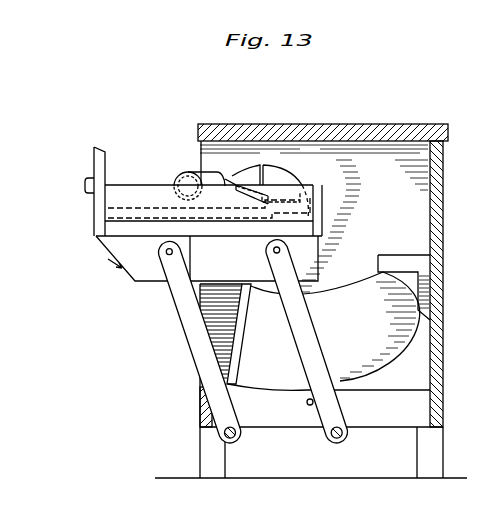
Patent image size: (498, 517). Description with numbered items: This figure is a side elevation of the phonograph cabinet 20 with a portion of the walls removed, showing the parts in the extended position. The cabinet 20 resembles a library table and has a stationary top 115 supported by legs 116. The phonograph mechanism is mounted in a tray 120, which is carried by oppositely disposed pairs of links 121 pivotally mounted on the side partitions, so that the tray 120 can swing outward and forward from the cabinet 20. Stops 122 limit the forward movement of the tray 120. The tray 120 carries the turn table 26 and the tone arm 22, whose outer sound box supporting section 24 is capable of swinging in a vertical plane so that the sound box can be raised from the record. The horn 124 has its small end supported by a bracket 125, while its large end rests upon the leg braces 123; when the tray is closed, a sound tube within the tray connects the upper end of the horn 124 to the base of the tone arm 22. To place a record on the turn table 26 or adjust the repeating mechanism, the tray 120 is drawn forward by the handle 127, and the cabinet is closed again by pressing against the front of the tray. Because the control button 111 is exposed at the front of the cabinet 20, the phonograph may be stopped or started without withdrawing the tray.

The stationary top 115 is at (372, 130).
The cabinet 20 is at (443, 197).
The handle 127 is at (86, 179).
The tray 120 is at (139, 273).
The turn table 26 is at (133, 210).
The control button 111 is at (96, 275).
The sound box supporting section 24 is at (208, 177).
The tone arm 22 is at (287, 175).
The bracket 125 is at (390, 257).
The legs 116 is at (200, 460).
The stops 122 is at (306, 402).
The horn 124 is at (333, 315).
The leg braces 123 is at (380, 397).
The links 121 is at (200, 346).